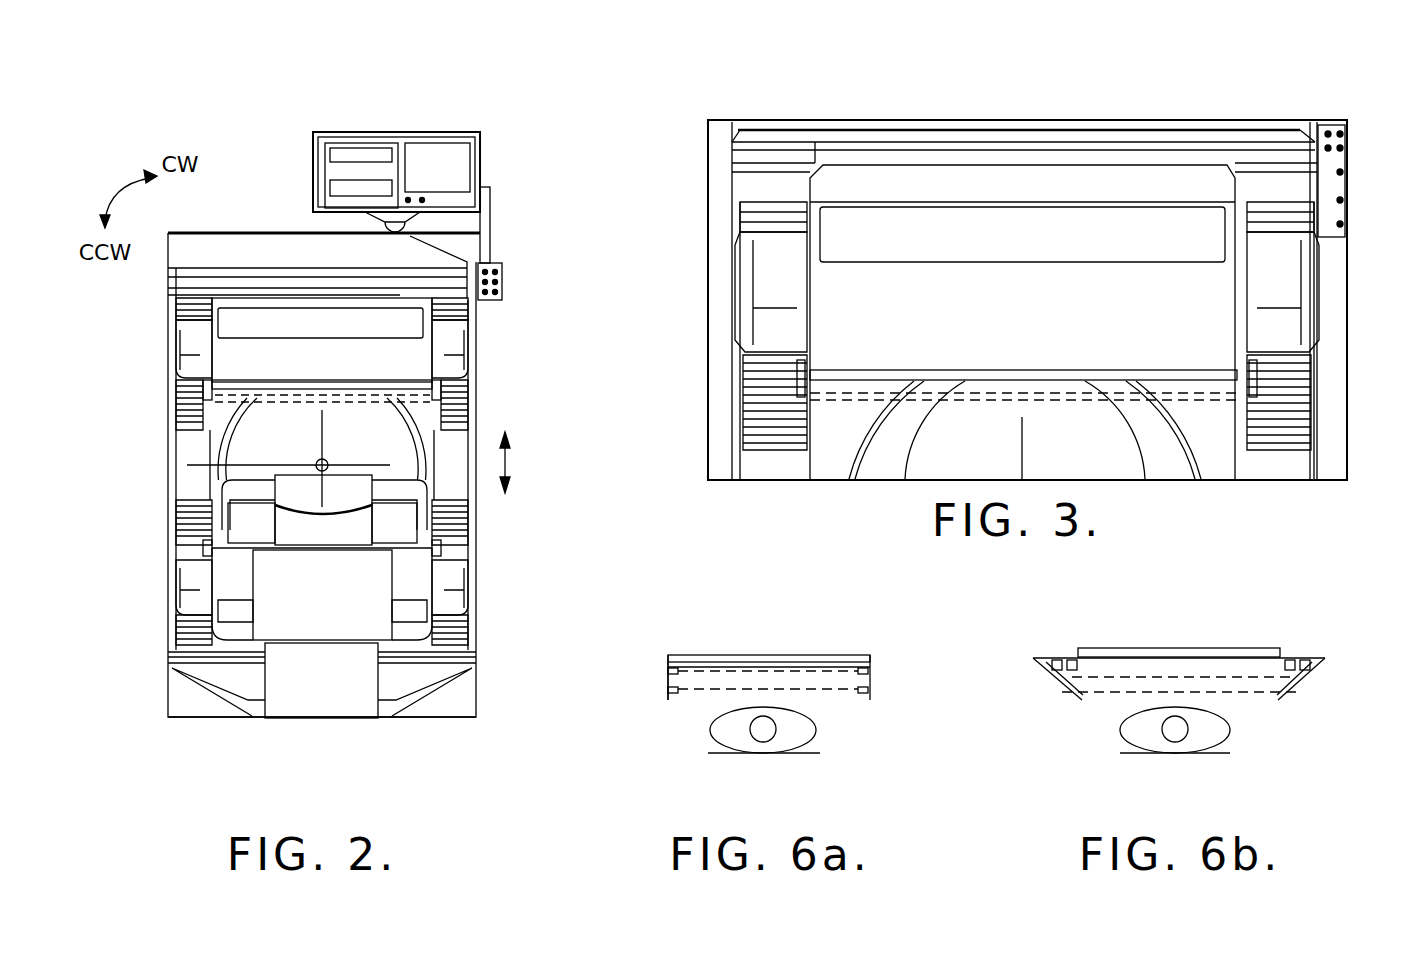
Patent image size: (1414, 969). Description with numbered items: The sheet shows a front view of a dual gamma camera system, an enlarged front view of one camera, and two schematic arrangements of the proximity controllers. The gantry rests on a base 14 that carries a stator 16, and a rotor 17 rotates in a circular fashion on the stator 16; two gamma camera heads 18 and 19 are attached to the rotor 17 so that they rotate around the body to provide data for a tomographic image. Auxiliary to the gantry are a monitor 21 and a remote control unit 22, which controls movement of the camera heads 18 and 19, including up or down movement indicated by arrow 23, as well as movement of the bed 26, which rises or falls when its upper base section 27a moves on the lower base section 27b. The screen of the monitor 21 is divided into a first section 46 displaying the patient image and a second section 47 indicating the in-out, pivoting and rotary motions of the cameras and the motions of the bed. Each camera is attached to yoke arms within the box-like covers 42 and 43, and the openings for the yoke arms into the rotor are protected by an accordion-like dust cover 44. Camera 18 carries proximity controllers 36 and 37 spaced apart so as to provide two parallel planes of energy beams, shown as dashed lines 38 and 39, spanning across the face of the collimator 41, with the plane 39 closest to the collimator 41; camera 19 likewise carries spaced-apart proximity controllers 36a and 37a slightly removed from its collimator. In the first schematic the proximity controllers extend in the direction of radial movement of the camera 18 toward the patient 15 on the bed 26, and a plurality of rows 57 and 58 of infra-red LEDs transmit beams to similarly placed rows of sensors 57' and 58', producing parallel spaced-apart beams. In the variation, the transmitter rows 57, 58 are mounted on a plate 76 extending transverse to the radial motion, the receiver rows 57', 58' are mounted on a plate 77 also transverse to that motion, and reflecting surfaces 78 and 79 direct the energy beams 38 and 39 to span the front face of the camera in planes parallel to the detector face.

In FIG. 2, the base 14 is at (462, 698).
In FIG. 6A, the patient 15 is at (710, 733).
In FIG. 6B, the patient 15 is at (1120, 735).
In FIG. 2, the stator 16 is at (173, 267).
In FIG. 3, the stator 16 is at (1080, 120).
In FIG. 2, the rotor 17 is at (280, 284).
In FIG. 3, the rotor 17 is at (887, 185).
In FIG. 2, the gamma camera head 18 is at (305, 373).
In FIG. 3, the gamma camera head 18 is at (942, 333).
In FIG. 6A, the gamma camera head 18 is at (760, 655).
In FIG. 6B, the gamma camera head 18 is at (1170, 648).
In FIG. 2, the gamma camera head 19 is at (337, 488).
In FIG. 2, the monitor 21 is at (385, 127).
In FIG. 2, the remote control unit 22 is at (503, 275).
In FIG. 2, the arrow 23 is at (515, 462).
In FIG. 2, the bed 26 is at (308, 546).
In FIG. 6A, the bed 26 is at (728, 755).
In FIG. 6B, the bed 26 is at (1140, 755).
In FIG. 2, the upper base section 27a is at (298, 613).
In FIG. 2, the lower base section 27b is at (298, 695).
In FIG. 2, the proximity controller 36 is at (167, 380).
In FIG. 3, the proximity controller 36 is at (760, 368).
In FIG. 6A, the proximity controller 36 is at (668, 678).
In FIG. 2, the proximity controller 36a is at (170, 538).
In FIG. 2, the proximity controller 37 is at (447, 378).
In FIG. 3, the proximity controller 37 is at (1270, 368).
In FIG. 2, the proximity controller 37a is at (468, 527).
In FIG. 2, the energy beam plane 38 is at (220, 400).
In FIG. 3, the energy beam plane 38 is at (1040, 397).
In FIG. 6A, the energy beam plane 38 is at (732, 688).
In FIG. 6B, the energy beam plane 38 is at (1253, 692).
In FIG. 2, the energy beam plane 39 is at (240, 398).
In FIG. 3, the energy beam plane 39 is at (992, 395).
In FIG. 6A, the energy beam plane 39 is at (818, 672).
In FIG. 6B, the energy beam plane 39 is at (1218, 680).
In FIG. 2, the collimator 41 is at (448, 372).
In FIG. 3, the collimator 41 is at (1072, 375).
In FIG. 2, the box-like cover 42 is at (468, 340).
In FIG. 3, the box-like cover 42 is at (1292, 270).
In FIG. 2, the box-like cover 43 is at (175, 342).
In FIG. 3, the box-like cover 43 is at (768, 272).
In FIG. 2, the accordion-like dust cover 44 is at (172, 302).
In FIG. 2, the first screen section 46 is at (452, 155).
In FIG. 2, the second screen section 47 is at (348, 170).
In FIG. 6A, the row of LEDs 57 is at (634, 644).
In FIG. 6B, the row of LEDs 57 is at (1057, 630).
In FIG. 6A, the row of infra-red light sensors 57' is at (898, 642).
In FIG. 6B, the row of infra-red light sensors 57' is at (1298, 630).
In FIG. 6A, the row of LEDs 58 is at (634, 715).
In FIG. 6B, the row of LEDs 58 is at (1178, 620).
In FIG. 6A, the row of infra-red light sensors 58' is at (900, 718).
In FIG. 6B, the plate 76 is at (1047, 670).
In FIG. 6B, the plate 77 is at (1310, 670).
In FIG. 6B, the reflecting surface 78 is at (1063, 683).
In FIG. 6B, the reflecting surface 79 is at (1300, 685).